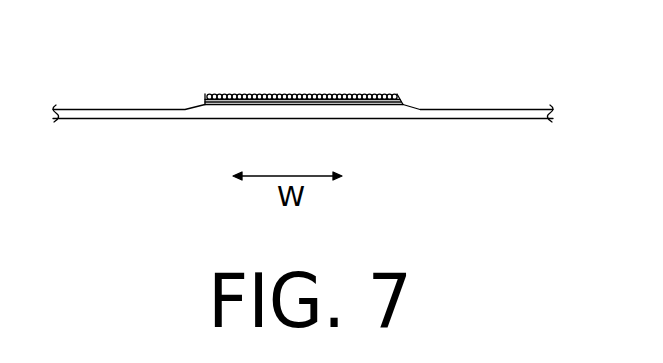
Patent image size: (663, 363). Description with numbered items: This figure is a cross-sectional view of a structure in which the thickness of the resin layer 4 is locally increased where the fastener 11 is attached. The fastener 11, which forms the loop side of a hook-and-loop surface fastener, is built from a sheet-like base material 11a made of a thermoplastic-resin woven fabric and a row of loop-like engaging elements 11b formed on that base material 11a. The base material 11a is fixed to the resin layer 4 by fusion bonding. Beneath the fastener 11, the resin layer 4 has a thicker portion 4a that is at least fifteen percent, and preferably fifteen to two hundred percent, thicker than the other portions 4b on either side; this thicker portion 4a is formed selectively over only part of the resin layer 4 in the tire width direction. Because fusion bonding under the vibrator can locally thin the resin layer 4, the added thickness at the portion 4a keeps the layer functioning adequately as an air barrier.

The resin layer 4 is at (146, 110).
The thicker portion of the resin layer 4a is at (380, 119).
The other portions of the resin layer 4b is at (93, 119).
The fastener 11 is at (337, 55).
The base material 11a is at (395, 97).
The engaging elements 11b is at (259, 93).